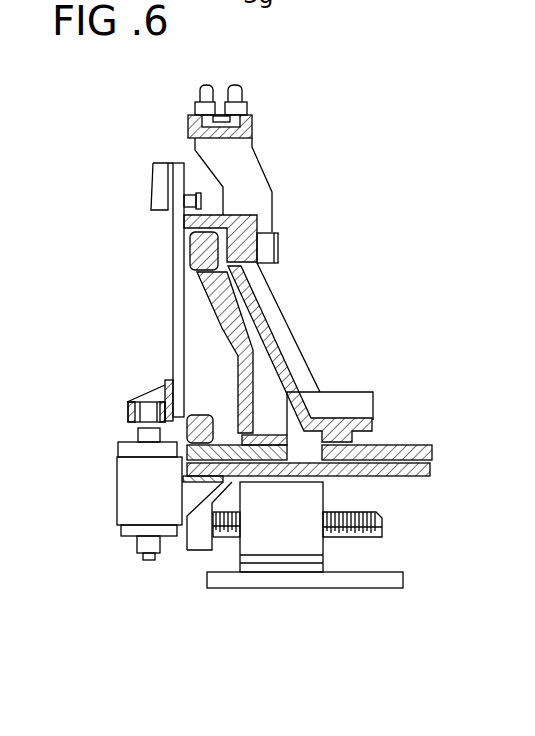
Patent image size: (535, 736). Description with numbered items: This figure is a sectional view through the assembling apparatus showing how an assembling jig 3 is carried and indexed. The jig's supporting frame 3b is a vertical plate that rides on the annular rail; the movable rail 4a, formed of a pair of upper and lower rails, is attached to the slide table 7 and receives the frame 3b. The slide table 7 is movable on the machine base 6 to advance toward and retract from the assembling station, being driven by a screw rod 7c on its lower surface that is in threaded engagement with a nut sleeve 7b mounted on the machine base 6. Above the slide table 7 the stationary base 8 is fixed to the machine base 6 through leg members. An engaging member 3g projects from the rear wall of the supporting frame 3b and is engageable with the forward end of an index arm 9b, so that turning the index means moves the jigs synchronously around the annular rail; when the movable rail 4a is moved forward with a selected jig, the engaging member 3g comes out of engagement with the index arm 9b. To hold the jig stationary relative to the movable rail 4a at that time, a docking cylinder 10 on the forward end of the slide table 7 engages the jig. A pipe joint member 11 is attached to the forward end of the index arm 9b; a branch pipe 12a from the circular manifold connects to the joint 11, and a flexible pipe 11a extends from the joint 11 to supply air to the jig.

The pipe joint member 11 is at (252, 128).
The flexible pipe 11a is at (200, 95).
The branch pipe 12a is at (247, 93).
The assembling jig 3 is at (177, 242).
The supporting frame 3b is at (180, 307).
The movable rail 4a is at (198, 250).
The engaging member 3g is at (282, 243).
The index arm 9b is at (277, 352).
The stationary base 8 is at (407, 445).
The slide table 7 is at (407, 475).
The docking cylinder 10 is at (122, 484).
The nut sleeve 7b is at (243, 542).
The screw rod 7c is at (338, 540).
The machine base 6 is at (287, 580).